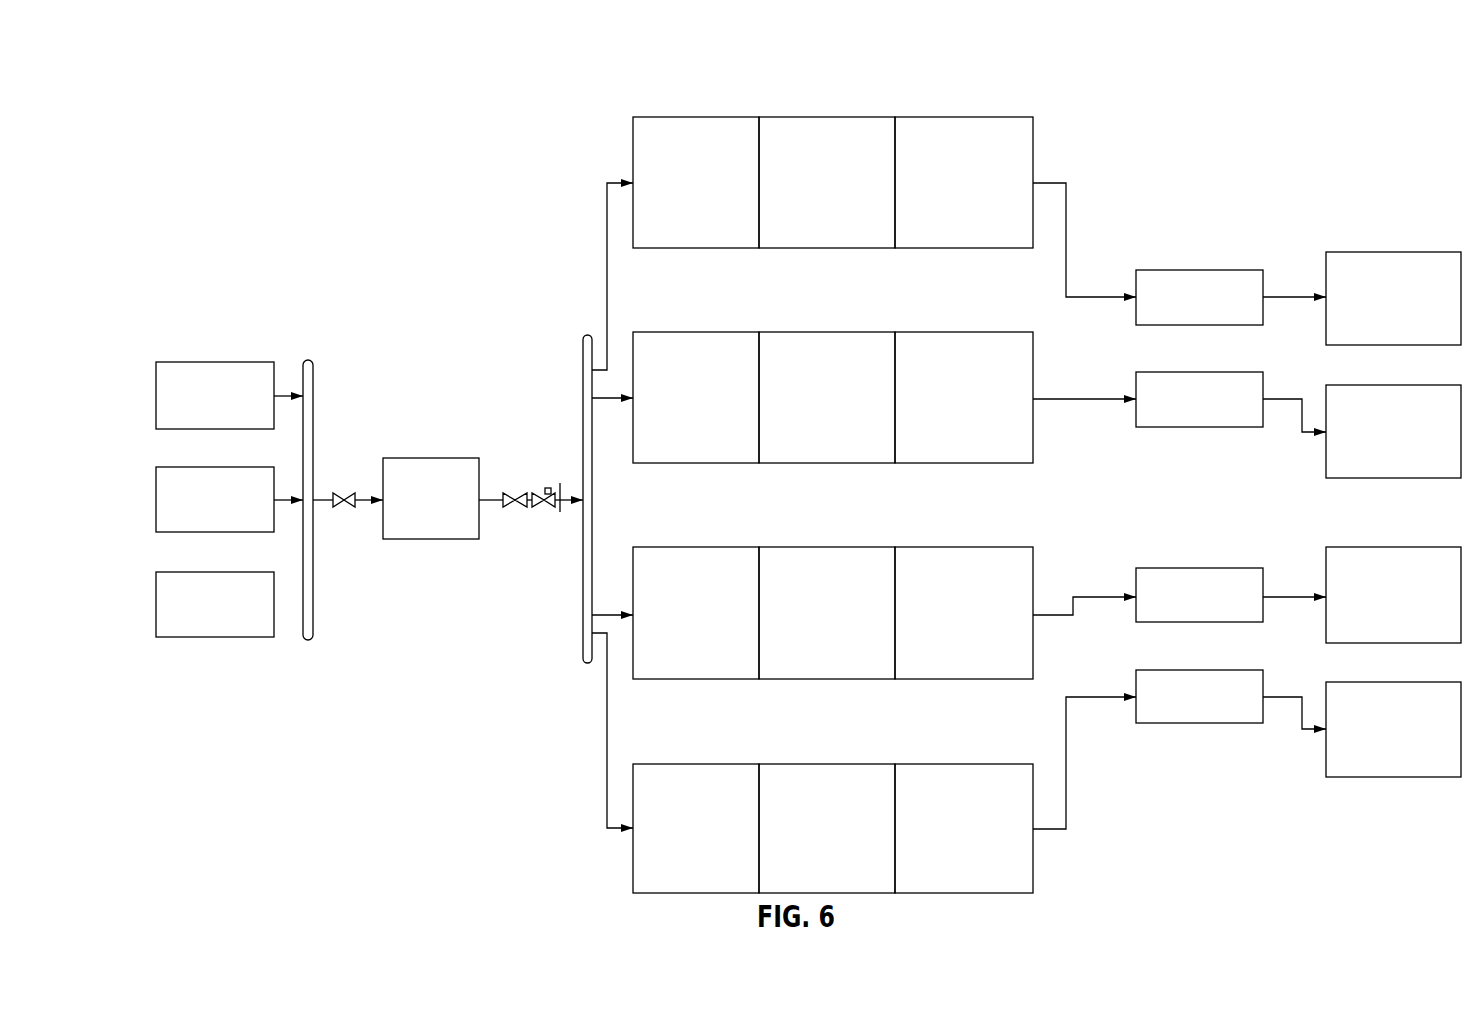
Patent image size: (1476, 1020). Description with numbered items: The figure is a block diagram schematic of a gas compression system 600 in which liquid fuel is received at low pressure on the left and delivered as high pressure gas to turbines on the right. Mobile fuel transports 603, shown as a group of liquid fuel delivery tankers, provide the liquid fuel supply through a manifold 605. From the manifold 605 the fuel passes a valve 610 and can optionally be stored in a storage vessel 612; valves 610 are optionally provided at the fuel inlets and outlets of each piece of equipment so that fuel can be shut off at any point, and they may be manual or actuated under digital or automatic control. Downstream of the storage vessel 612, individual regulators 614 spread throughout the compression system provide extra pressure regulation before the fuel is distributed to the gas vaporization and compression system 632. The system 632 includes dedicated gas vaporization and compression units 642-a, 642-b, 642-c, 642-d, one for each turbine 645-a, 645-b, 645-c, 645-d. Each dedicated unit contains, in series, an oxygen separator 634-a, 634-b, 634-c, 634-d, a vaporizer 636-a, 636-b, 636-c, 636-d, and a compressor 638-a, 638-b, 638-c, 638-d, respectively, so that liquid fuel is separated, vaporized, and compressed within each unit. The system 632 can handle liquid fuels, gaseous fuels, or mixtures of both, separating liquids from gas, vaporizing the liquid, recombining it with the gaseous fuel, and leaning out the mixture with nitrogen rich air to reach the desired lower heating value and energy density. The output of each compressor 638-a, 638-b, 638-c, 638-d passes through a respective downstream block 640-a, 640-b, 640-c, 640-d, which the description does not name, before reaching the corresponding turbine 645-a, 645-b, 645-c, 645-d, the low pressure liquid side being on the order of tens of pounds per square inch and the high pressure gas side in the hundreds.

The gas compression system 600 is at (205, 73).
The mobile fuel transports 603 is at (152, 362).
The manifold 605 is at (307, 387).
The valves 610 is at (338, 507).
The storage vessel 612 is at (452, 512).
The regulators 614 is at (537, 507).
The gas vaporization and compression system 632 is at (1033, 70).
The gas vaporization and compression unit 642-a is at (1033, 117).
The gas vaporization and compression unit 642-b is at (1033, 332).
The gas vaporization and compression unit 642-c is at (1033, 547).
The gas vaporization and compression unit 642-d is at (1033, 764).
The oxygen separator 634-a is at (727, 197).
The oxygen separator 634-b is at (727, 412).
The oxygen separator 634-c is at (727, 627).
The oxygen separator 634-d is at (727, 835).
The vaporizer 636-a is at (860, 197).
The vaporizer 636-b is at (860, 412).
The vaporizer 636-c is at (860, 627).
The vaporizer 636-d is at (860, 835).
The compressor 638-a is at (997, 197).
The compressor 638-b is at (997, 412).
The compressor 638-c is at (997, 627).
The compressor 638-d is at (997, 835).
The regulator 640-a is at (1232, 312).
The regulator 640-b is at (1232, 414).
The regulator 640-c is at (1232, 609).
The regulator 640-d is at (1232, 710).
The turbine 645-a is at (1425, 310).
The turbine 645-b is at (1425, 447).
The turbine 645-c is at (1425, 609).
The turbine 645-d is at (1425, 742).